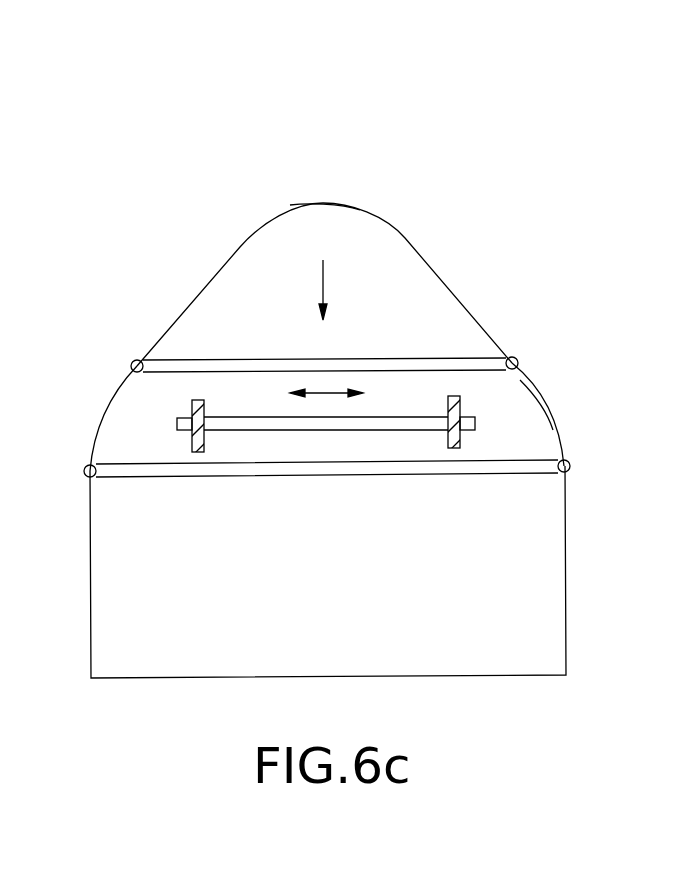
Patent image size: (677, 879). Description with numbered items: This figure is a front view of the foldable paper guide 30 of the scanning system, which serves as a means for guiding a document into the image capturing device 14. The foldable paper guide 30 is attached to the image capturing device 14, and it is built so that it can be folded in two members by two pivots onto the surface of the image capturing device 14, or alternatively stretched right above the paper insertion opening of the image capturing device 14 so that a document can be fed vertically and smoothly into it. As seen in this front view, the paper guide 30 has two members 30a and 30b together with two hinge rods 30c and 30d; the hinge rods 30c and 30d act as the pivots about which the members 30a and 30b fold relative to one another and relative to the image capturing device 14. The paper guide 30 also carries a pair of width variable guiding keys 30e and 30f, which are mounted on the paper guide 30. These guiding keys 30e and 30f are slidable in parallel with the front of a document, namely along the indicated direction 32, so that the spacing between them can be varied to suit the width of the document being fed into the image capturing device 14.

The foldable paper guide 30 is at (122, 205).
The image capturing device 14 is at (550, 590).
The member 30a is at (530, 432).
The member 30b is at (407, 298).
The hinge rod 30c is at (568, 467).
The hinge rod 30d is at (515, 358).
The width variable guiding key 30e is at (460, 399).
The width variable guiding key 30f is at (193, 399).
The direction 32 is at (322, 393).